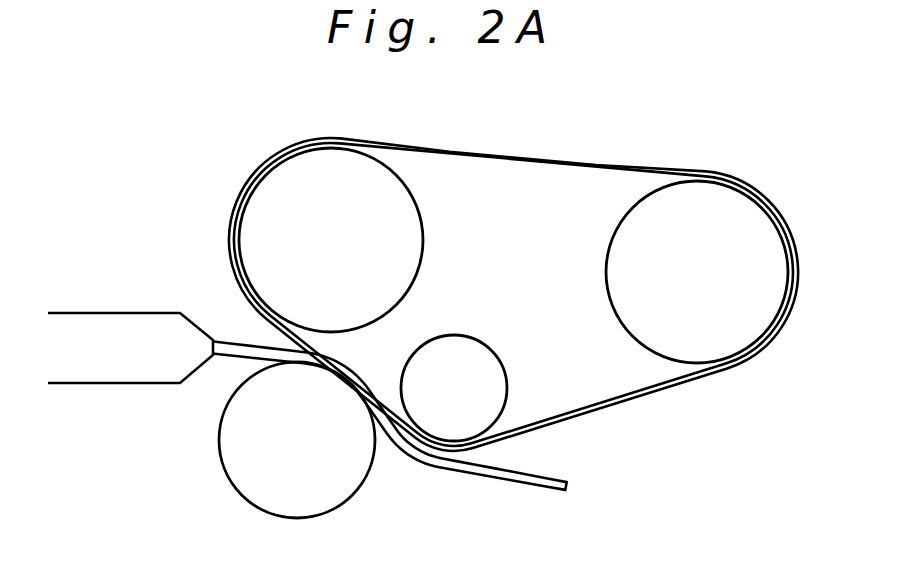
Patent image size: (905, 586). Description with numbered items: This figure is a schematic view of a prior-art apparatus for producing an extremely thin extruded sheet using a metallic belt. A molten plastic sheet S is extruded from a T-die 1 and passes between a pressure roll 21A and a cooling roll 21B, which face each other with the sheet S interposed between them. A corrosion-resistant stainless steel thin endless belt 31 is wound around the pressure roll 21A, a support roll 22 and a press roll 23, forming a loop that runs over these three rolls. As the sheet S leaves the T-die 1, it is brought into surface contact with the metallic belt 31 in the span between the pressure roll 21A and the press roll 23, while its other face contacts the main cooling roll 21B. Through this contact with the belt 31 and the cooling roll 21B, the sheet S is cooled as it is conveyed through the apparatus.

The T-die 1 is at (134, 312).
The pressure roll 21A is at (358, 255).
The cooling roll 21B is at (327, 460).
The support roll 22 is at (725, 288).
The press roll 23 is at (473, 408).
The endless belt 31 is at (493, 157).
The plastic sheet S is at (471, 472).